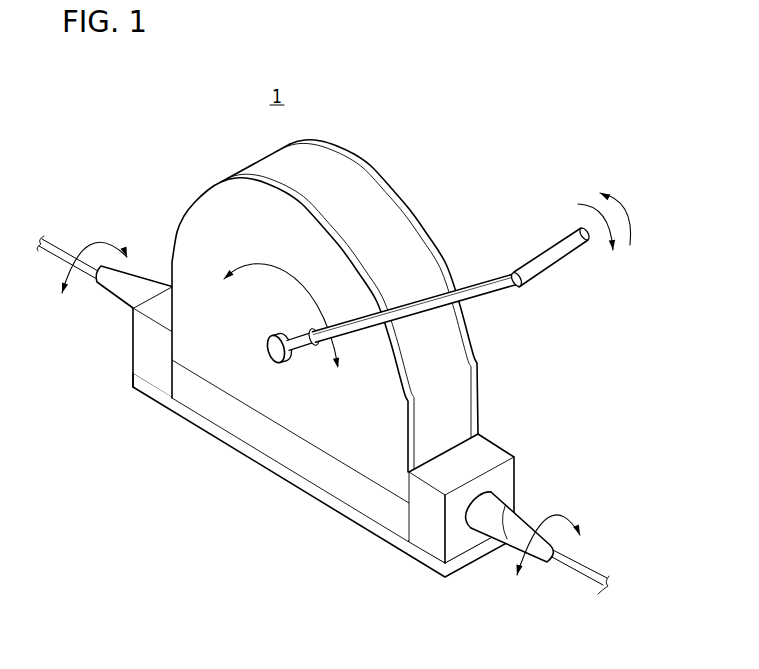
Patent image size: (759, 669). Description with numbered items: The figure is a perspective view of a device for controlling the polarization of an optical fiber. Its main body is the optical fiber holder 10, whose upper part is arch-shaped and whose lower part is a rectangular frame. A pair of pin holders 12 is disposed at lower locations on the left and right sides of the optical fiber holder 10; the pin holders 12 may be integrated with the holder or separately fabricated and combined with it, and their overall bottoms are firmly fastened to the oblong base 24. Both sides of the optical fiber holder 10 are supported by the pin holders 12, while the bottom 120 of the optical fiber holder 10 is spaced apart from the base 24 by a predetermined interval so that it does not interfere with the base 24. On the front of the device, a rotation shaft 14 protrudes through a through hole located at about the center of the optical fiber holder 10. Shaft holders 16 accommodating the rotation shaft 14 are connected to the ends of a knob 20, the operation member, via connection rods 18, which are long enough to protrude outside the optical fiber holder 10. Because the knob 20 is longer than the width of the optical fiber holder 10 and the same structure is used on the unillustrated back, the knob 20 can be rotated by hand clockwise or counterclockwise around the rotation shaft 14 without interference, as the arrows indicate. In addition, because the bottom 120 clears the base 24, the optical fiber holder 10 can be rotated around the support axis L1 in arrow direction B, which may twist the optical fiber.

The optical fiber holder 10 is at (193, 188).
The pin holder 12 is at (503, 428).
The rotation shaft 14 is at (276, 350).
The shaft holder 16 is at (302, 345).
The connection rod 18 is at (418, 298).
The knob 20 is at (560, 253).
The base 24 is at (477, 570).
The bottom of the optical fiber holder 120 is at (349, 468).
The support axis L1 is at (582, 570).
The arrow direction B is at (321, 393).